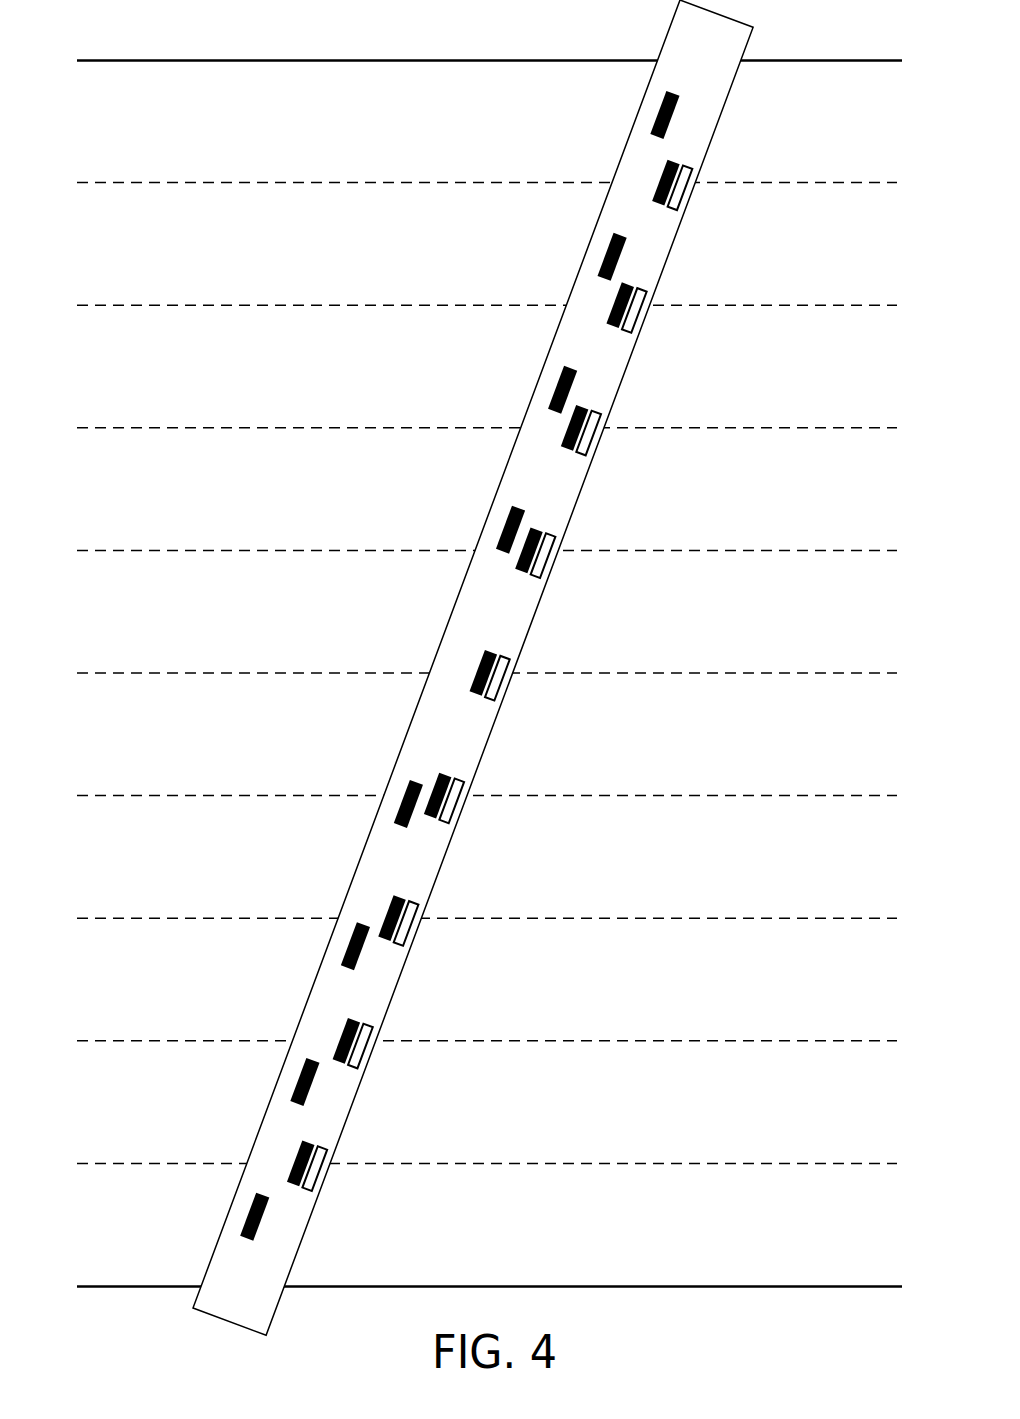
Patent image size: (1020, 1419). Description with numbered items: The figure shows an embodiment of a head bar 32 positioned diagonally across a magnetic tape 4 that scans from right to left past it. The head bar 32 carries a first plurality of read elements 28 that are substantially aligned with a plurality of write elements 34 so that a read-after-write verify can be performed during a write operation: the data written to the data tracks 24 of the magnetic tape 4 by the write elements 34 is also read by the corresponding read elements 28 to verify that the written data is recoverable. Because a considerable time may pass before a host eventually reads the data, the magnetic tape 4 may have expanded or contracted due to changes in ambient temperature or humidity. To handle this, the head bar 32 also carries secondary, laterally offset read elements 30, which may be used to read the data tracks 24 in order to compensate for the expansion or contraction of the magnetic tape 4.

The magnetic tape 4 is at (78, 108).
The data tracks 24 is at (830, 182).
The first plurality of read elements 28 is at (483, 673).
The laterally offset read elements 30 is at (459, 666).
The head bar 32 is at (658, 46).
The write elements 34 is at (497, 678).